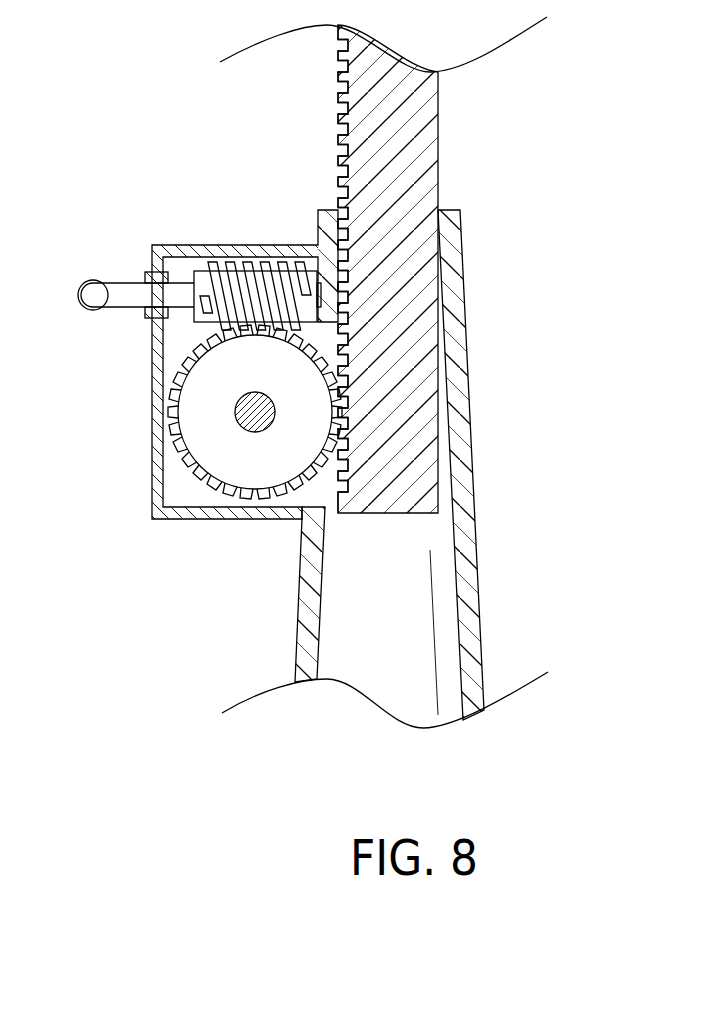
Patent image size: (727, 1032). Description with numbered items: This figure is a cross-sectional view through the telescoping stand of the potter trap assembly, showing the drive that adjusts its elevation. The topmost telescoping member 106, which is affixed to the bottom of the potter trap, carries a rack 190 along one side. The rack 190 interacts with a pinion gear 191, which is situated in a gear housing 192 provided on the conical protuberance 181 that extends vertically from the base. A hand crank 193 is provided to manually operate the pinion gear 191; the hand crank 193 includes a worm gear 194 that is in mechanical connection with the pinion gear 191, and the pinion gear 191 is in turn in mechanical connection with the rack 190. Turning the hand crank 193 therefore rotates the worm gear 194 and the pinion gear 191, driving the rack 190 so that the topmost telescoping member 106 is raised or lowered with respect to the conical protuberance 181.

The topmost telescoping member 106 is at (438, 127).
The rack 190 is at (345, 98).
The conical protuberance 181 is at (477, 596).
The gear housing 192 is at (153, 470).
The hand crank 193 is at (97, 278).
The worm gear 194 is at (255, 282).
The pinion gear 191 is at (183, 367).